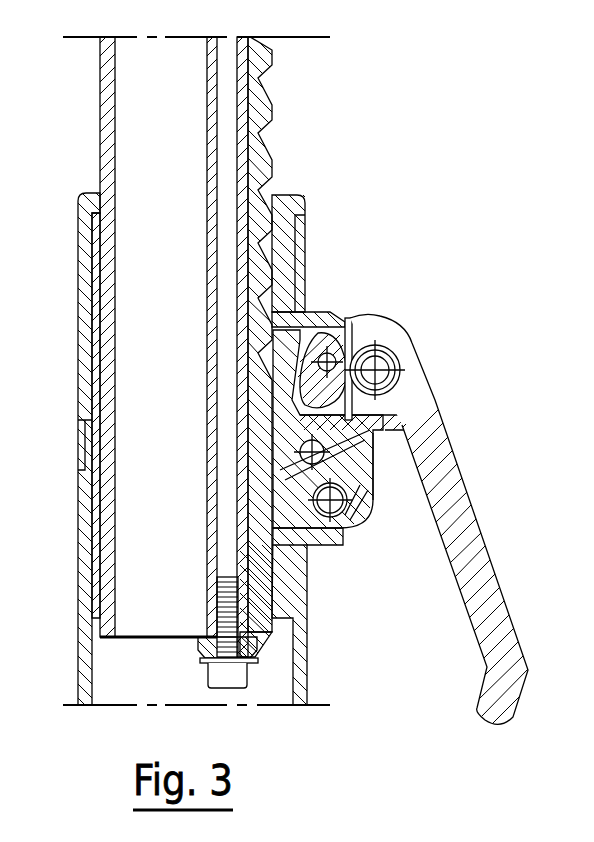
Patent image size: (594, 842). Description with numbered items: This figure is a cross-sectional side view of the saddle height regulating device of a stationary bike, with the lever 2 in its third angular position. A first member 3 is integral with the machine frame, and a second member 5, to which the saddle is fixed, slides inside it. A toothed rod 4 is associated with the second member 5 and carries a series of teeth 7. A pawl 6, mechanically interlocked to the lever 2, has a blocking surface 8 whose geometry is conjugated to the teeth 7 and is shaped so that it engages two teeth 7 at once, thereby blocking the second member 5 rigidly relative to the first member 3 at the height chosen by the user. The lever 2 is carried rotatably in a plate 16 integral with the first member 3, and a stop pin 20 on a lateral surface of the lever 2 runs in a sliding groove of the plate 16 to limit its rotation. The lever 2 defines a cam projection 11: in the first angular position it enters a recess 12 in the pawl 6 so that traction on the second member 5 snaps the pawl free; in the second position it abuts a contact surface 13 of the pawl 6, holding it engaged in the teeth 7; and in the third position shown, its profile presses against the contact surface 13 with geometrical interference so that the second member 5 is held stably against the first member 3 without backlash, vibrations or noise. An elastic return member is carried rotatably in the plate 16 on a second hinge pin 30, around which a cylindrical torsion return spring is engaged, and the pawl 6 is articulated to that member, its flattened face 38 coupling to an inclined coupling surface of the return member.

The lever 2 is at (467, 551).
The first member 3 is at (330, 690).
The toothed rod 4 is at (270, 632).
The second member 5 is at (250, 99).
The pawl 6 is at (420, 424).
The teeth 7 is at (273, 175).
The blocking surface 8 is at (245, 330).
The cam projection 11 is at (401, 378).
The recess 12 is at (377, 438).
The contact surface 13 is at (370, 340).
The plate 16 is at (281, 238).
The stop pin 20 is at (353, 320).
The second hinge pin 30 is at (352, 535).
The flattened face 38 is at (315, 518).